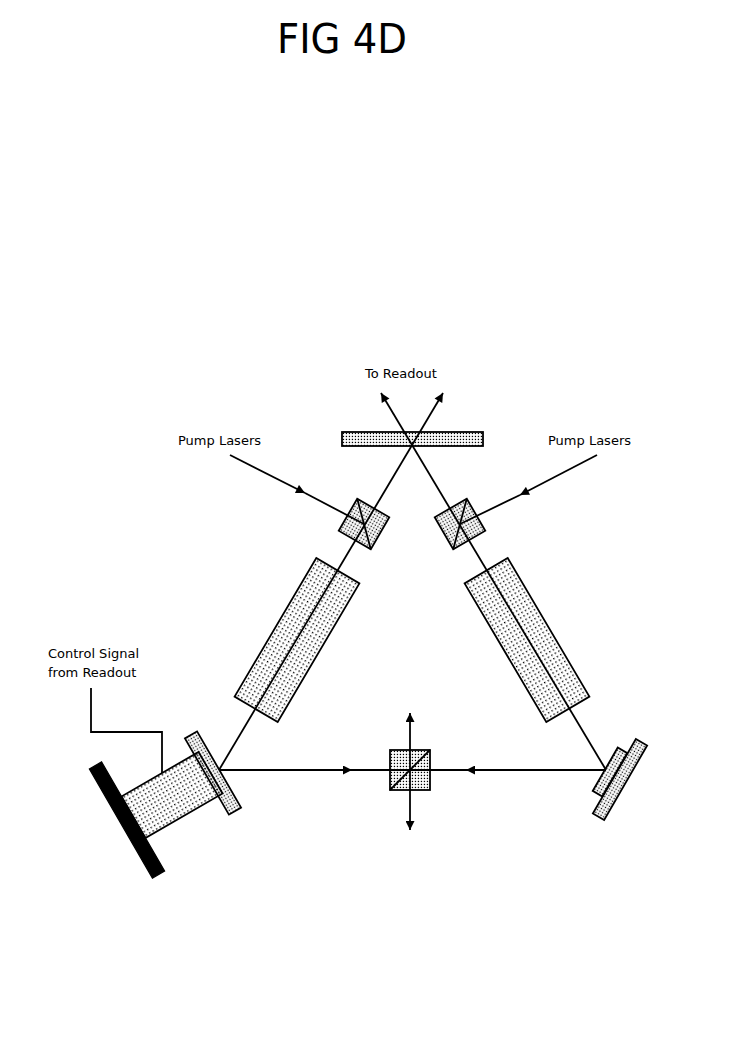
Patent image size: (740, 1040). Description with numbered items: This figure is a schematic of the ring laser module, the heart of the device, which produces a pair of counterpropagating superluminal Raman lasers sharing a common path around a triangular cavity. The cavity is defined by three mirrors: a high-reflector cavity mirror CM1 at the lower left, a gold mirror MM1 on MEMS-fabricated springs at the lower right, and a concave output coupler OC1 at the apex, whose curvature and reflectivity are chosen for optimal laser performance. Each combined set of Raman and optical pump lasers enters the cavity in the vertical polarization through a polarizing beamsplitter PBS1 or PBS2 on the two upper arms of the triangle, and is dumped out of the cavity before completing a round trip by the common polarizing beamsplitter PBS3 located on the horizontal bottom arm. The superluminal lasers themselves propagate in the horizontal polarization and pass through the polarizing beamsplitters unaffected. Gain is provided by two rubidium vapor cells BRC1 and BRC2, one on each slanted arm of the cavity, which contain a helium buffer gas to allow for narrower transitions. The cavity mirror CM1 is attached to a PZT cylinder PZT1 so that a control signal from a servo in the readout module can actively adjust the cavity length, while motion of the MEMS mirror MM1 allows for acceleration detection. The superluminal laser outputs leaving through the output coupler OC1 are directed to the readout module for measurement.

The output coupler OC1 is at (416, 451).
The polarizing beamsplitter PBS1 is at (338, 524).
The polarizing beamsplitter PBS2 is at (484, 524).
The common polarizing beamsplitter PBS3 is at (421, 759).
The rubidium vapor cell BRC1 is at (292, 640).
The rubidium vapor cell BRC2 is at (528, 640).
The cavity mirror CM1 is at (223, 783).
The PZT cylinder PZT1 is at (155, 815).
The MEMS mirror MM1 is at (593, 779).